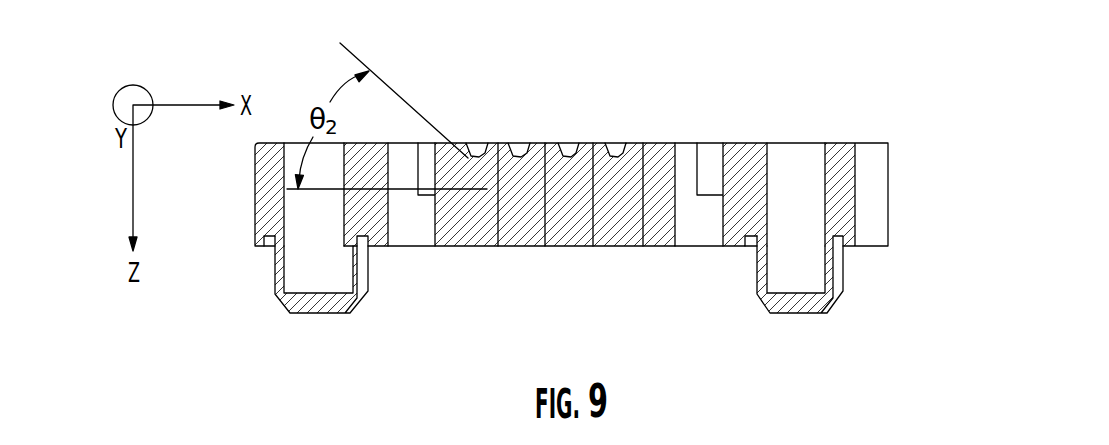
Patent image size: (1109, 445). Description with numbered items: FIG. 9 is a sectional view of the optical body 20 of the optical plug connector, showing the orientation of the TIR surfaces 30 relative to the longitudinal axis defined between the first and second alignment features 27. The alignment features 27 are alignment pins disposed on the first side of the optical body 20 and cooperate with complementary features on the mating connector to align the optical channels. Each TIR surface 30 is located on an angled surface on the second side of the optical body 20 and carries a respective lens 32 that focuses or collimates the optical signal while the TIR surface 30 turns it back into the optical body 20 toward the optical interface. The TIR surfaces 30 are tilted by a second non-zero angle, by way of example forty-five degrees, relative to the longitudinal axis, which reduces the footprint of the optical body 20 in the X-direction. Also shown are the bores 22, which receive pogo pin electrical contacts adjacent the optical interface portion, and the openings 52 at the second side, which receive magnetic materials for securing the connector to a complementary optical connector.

The optical body 20 is at (945, 186).
The bores 22 is at (410, 157).
The alignment features 27 is at (325, 303).
The TIR surface 30 is at (485, 157).
The lens 32 is at (488, 143).
The openings 52 is at (300, 212).